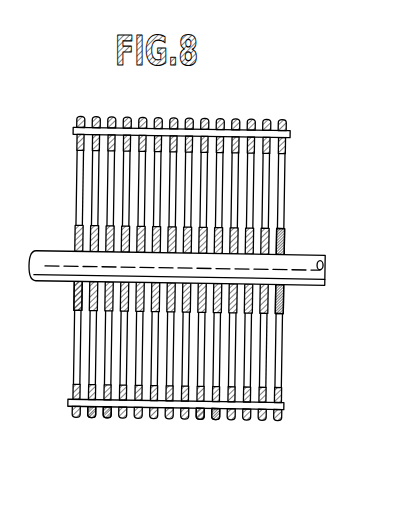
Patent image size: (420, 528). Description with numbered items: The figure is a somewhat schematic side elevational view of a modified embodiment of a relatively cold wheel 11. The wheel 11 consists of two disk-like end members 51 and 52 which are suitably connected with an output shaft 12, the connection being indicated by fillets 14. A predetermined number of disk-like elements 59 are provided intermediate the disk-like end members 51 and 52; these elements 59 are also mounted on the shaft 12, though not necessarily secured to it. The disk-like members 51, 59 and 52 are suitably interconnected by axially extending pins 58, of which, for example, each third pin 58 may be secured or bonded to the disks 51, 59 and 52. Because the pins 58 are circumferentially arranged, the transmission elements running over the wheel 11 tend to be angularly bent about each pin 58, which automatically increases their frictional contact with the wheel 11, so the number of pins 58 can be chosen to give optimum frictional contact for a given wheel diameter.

The relatively cold wheel 11 is at (229, 111).
The output shaft 12 is at (55, 270).
The fillets 14 is at (76, 292).
The disk-like end member 51 is at (76, 189).
The disk-like end member 52 is at (284, 236).
The axially extending pins 58 is at (290, 130).
The disk-like elements 59 is at (107, 421).